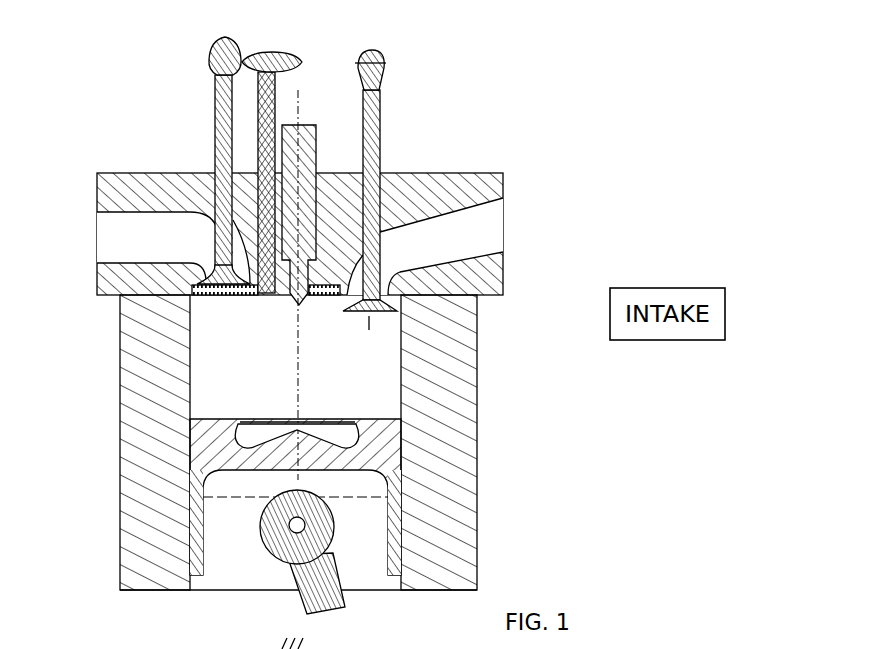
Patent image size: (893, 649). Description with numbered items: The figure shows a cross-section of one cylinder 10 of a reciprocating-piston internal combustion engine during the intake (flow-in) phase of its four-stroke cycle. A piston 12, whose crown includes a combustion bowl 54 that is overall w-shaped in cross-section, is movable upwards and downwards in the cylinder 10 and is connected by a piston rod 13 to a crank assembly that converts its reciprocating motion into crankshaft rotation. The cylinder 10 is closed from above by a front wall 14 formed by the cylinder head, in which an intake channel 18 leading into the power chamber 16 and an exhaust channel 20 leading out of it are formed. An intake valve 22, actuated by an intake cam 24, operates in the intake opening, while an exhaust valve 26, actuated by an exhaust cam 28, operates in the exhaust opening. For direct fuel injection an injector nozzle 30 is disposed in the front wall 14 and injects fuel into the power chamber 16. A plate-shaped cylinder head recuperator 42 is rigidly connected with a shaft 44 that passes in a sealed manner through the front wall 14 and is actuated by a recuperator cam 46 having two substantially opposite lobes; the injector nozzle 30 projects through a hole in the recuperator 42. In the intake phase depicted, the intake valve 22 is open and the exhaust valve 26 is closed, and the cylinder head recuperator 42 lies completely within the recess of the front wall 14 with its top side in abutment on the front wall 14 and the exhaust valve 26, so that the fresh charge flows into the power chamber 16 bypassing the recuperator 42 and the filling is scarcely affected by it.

The cylinder 10 is at (457, 518).
The piston 12 is at (366, 460).
The piston rod 13 is at (325, 580).
The front wall 14 is at (118, 196).
The power chamber 16 is at (300, 378).
The intake channel 18 is at (483, 232).
The exhaust channel 20 is at (100, 245).
The intake valve 22 is at (370, 143).
The intake cam 24 is at (373, 70).
The exhaust valve 26 is at (225, 148).
The exhaust cam 28 is at (214, 60).
The injector nozzle 30 is at (299, 137).
The cylinder head recuperator 42 is at (216, 298).
The shaft 44 is at (265, 100).
The recuperator cam 46 is at (259, 66).
The combustion bowl 54 is at (337, 433).